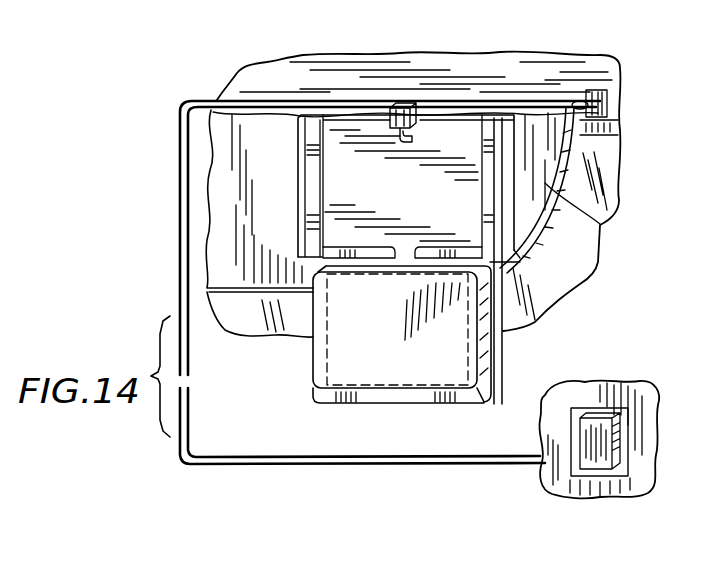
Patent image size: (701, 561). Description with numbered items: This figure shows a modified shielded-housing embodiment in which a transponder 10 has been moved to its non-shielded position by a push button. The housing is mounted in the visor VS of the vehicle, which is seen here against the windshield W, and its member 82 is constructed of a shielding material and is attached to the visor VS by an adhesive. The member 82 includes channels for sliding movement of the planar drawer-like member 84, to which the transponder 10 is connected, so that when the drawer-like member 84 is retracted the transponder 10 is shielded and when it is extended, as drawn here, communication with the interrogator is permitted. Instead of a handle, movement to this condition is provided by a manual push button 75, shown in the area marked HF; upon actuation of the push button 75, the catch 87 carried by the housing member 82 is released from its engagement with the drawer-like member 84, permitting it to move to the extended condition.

The transponder 10 is at (311, 379).
The member 82 is at (503, 119).
The planar drawer-like member 84 is at (488, 393).
The catch 87 is at (402, 112).
The manual push button 75 is at (627, 450).
The windshield W is at (557, 273).
The visor VS is at (600, 227).
The headliner fastener HF is at (599, 440).